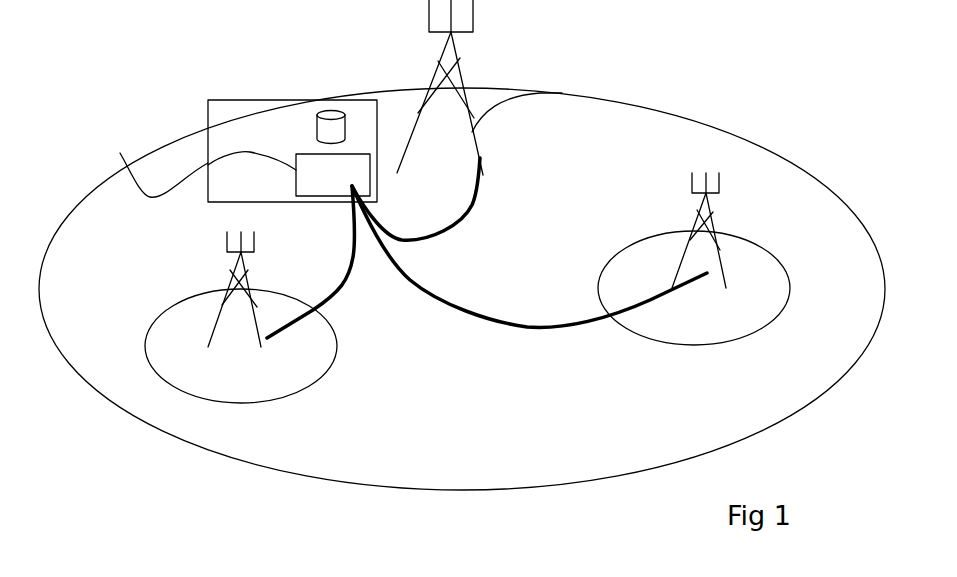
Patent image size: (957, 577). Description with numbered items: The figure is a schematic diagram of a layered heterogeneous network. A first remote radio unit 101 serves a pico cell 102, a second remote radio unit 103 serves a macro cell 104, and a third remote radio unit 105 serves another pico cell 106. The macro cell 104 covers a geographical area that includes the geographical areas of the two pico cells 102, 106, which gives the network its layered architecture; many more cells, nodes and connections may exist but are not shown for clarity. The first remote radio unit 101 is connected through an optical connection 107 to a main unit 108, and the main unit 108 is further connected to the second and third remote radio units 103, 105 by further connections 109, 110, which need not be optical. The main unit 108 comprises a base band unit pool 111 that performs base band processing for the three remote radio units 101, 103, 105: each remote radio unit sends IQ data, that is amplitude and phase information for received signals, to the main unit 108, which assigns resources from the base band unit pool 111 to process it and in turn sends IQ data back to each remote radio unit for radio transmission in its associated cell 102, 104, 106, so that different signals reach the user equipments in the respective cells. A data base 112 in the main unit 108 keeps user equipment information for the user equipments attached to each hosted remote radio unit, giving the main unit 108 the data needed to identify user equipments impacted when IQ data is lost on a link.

The first remote radio unit 101 is at (237, 258).
The pico cell 102 is at (145, 358).
The second remote radio unit 103 is at (538, 90).
The macro cell 104 is at (672, 91).
The third remote radio unit 105 is at (713, 218).
The pico cell 106 is at (770, 327).
The optical connection 107 is at (337, 300).
The main unit 108 is at (237, 100).
The connection 109 is at (457, 212).
The connection 110 is at (562, 328).
The base band unit pool 111 is at (201, 165).
The data base 112 is at (332, 110).